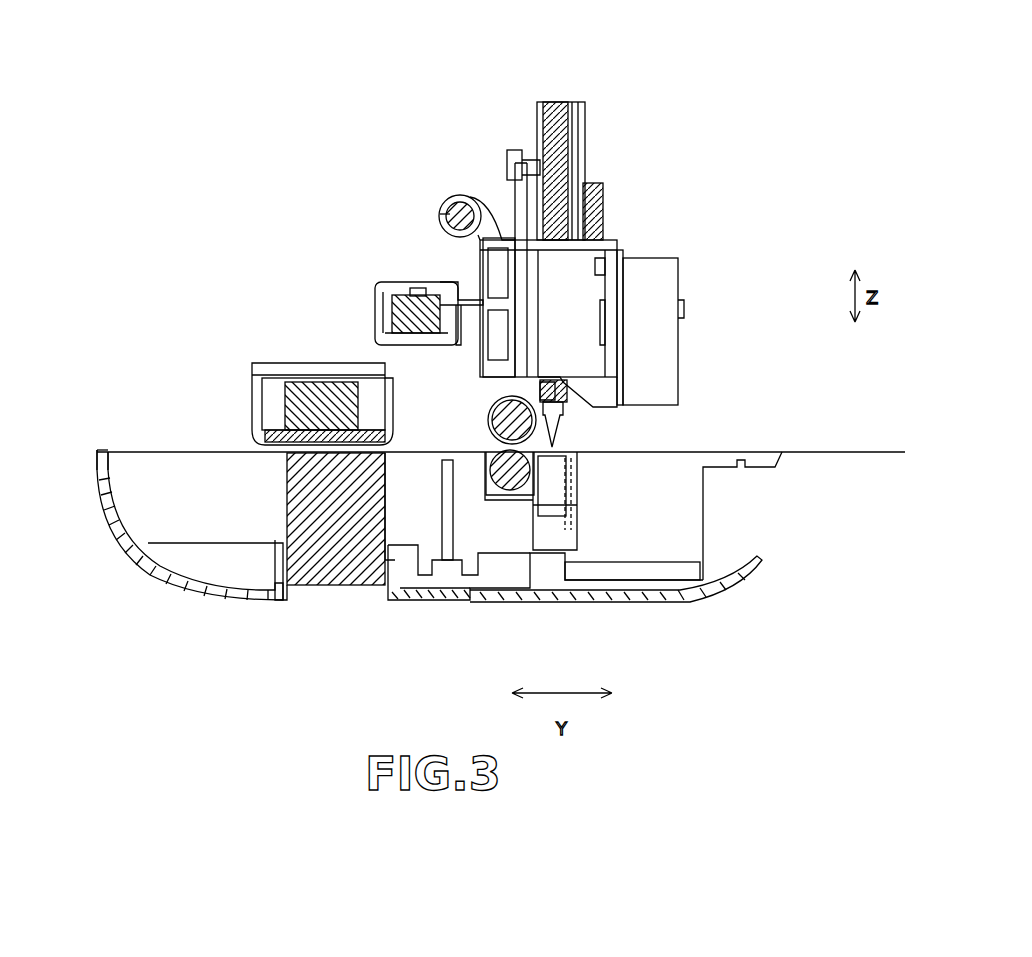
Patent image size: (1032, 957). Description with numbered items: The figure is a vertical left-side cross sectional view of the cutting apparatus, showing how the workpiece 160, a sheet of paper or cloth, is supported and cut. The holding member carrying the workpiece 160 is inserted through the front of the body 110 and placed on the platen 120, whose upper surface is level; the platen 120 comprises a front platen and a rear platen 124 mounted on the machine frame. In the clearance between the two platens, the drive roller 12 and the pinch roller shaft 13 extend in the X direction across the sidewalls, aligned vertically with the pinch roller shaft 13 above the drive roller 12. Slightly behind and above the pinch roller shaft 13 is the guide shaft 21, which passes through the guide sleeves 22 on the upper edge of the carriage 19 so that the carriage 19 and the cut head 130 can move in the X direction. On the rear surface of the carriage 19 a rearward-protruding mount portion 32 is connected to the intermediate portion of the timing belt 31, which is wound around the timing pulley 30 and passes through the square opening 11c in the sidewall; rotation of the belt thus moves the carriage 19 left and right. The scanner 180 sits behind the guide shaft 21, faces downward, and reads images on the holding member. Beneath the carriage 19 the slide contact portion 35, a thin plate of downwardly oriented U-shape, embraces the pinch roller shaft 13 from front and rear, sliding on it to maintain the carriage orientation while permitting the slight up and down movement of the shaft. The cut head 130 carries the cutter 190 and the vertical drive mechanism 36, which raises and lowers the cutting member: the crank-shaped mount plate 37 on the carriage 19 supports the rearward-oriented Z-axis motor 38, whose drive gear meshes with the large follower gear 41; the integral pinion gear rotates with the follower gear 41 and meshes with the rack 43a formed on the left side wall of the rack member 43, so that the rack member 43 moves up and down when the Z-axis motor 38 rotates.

The square opening 11c is at (405, 282).
The drive roller 12 is at (535, 492).
The pinch roller shaft 13 is at (490, 450).
The carriage 19 is at (507, 235).
The guide shaft 21 is at (445, 202).
The guide sleeve 22 is at (465, 195).
The timing pulley 30 is at (418, 345).
The timing belt 31 is at (457, 283).
The mount portion 32 is at (440, 295).
The slide contact portion 35 is at (488, 416).
The vertical drive mechanism 36 is at (655, 245).
The mount plate 37 is at (596, 382).
The Z-axis motor 38 is at (663, 292).
The follower gear 41 is at (603, 193).
The rack member 43 is at (587, 120).
The rack 43a is at (558, 102).
The body 110 is at (200, 588).
The platen 120 is at (153, 513).
The rear platen 124 is at (110, 452).
The cut head 130 is at (685, 187).
The workpiece 160 is at (172, 452).
The scanner 180 is at (313, 365).
The cutter 190 is at (560, 445).